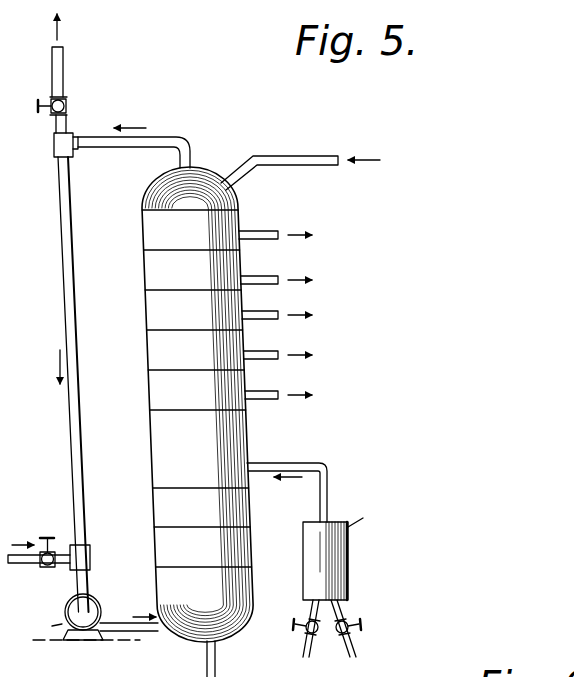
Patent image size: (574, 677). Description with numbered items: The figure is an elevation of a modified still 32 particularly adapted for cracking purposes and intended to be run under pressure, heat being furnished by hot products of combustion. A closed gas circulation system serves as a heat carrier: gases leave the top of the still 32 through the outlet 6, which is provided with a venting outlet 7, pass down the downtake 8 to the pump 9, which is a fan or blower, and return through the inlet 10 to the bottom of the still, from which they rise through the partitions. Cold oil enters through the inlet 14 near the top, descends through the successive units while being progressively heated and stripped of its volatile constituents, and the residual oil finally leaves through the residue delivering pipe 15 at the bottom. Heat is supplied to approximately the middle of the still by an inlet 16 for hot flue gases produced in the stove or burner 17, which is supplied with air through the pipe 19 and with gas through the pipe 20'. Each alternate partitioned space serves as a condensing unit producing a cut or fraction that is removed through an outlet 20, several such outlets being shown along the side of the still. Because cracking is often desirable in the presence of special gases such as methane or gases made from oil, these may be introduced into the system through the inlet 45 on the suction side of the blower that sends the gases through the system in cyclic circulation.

The outlet 6 is at (170, 137).
The venting outlet 7 is at (64, 73).
The downtake 8 is at (66, 298).
The pump 9 is at (100, 602).
The inlet 10 is at (162, 634).
The inlet 14 is at (290, 158).
The residue delivering pipe 15 is at (217, 660).
The inlet 16 is at (290, 457).
The stove or burner 17 is at (349, 556).
The pipe 19 is at (310, 612).
The outlet 20 is at (275, 330).
The pipe 20' is at (365, 625).
The still 32 is at (166, 456).
The inlet 45 is at (24, 570).